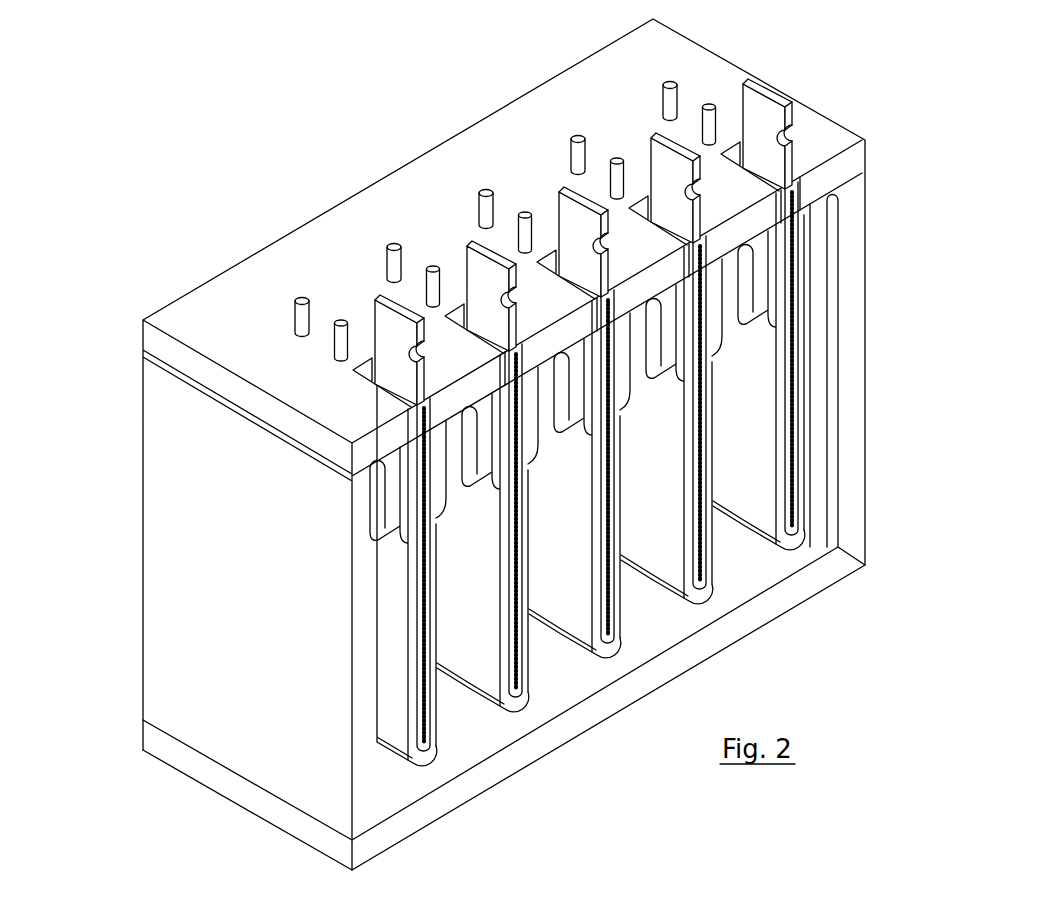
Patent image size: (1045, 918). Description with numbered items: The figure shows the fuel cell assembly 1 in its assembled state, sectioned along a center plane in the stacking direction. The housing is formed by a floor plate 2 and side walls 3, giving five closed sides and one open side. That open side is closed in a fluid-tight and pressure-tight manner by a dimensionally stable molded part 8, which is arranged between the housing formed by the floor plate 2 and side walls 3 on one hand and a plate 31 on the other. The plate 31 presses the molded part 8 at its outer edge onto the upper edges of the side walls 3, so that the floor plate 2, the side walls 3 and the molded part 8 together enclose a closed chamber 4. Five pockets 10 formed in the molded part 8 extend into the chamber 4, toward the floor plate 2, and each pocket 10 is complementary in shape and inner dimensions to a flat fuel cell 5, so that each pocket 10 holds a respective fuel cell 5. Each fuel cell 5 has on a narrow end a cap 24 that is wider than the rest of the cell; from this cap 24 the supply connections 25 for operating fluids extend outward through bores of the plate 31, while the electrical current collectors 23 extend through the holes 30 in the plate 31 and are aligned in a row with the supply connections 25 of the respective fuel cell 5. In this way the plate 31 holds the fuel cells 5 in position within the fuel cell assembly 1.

The fuel cell assembly 1 is at (962, 140).
The floor plate 2 is at (802, 593).
The side walls 3 is at (852, 452).
The chamber 4 is at (740, 535).
The fuel cell 5 is at (797, 325).
The molded part 8 is at (820, 210).
The pocket 10 is at (808, 375).
The electrical current collector 23 is at (785, 118).
The cap 24 is at (807, 253).
The supply connections 25 is at (710, 113).
The holes 30 is at (353, 370).
The plate 31 is at (823, 137).